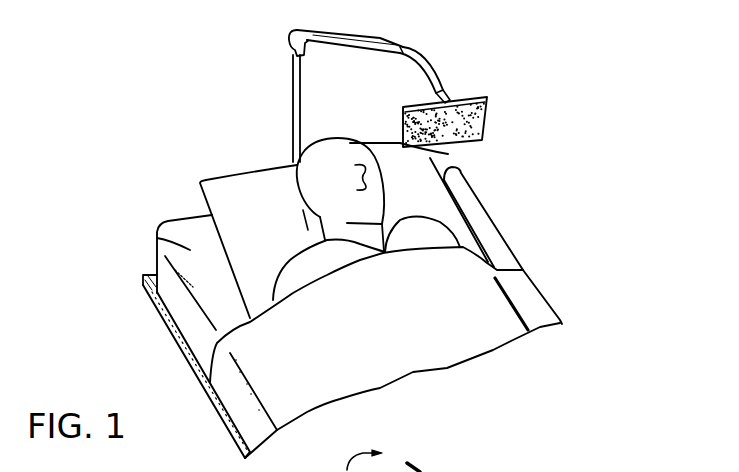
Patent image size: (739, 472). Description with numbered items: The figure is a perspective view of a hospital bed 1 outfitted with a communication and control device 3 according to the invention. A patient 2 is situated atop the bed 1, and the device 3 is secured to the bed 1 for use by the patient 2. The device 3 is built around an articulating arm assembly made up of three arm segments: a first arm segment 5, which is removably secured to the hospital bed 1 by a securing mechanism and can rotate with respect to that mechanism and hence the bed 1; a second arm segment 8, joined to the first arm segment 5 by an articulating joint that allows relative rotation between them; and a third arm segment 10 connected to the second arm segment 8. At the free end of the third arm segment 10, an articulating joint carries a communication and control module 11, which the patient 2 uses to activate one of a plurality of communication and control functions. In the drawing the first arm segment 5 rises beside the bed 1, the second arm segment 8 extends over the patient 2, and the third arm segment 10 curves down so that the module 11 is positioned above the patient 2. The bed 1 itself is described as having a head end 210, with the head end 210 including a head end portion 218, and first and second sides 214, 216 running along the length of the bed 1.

The hospital bed 1 is at (160, 347).
The patient 2 is at (430, 232).
The communication and control device 3 is at (427, 51).
The first arm segment 5 is at (279, 131).
The second arm segment 8 is at (396, 9).
The third arm segment 10 is at (429, 77).
The communication and control module 11 is at (490, 118).
The head end 210 is at (520, 226).
The first side 214 is at (523, 267).
The second side 216 is at (180, 298).
The head end portion 218 is at (156, 231).